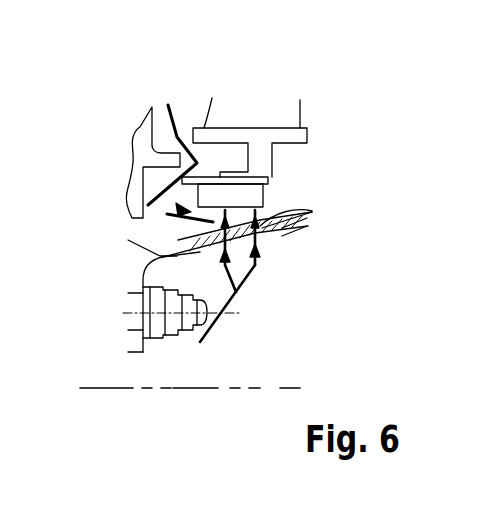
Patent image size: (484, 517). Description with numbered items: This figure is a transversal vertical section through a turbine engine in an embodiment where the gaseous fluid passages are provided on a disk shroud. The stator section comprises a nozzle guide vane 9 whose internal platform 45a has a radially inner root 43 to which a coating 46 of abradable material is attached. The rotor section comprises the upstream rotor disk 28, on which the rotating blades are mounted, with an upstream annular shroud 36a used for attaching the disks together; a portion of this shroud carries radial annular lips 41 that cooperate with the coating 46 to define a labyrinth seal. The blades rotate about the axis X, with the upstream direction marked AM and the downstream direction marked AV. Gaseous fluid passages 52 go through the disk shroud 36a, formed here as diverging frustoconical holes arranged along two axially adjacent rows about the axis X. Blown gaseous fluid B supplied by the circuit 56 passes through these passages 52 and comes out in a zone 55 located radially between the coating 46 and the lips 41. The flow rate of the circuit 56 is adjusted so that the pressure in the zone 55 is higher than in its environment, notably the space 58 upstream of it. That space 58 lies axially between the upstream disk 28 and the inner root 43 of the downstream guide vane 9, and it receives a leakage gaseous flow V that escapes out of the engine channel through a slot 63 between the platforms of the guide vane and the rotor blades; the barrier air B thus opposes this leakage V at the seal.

The nozzle guide vane 9 is at (226, 101).
The leakage gaseous flow V is at (177, 114).
The slot 63 is at (135, 149).
The rotor disk 28 is at (131, 207).
The internal platform 45a is at (308, 137).
The abradable coating 46 is at (230, 192).
The inner root 43 is at (243, 215).
The zone 55 is at (270, 173).
The space 58 is at (194, 230).
The upstream annular shroud 36a is at (282, 230).
The lip 41 is at (312, 212).
The gaseous fluid passage 52 is at (234, 250).
The blown gaseous fluid B is at (218, 336).
The circuit 56 is at (181, 330).
The axis X is at (103, 389).
The upstream AM is at (31, 167).
The downstream AV is at (414, 181).